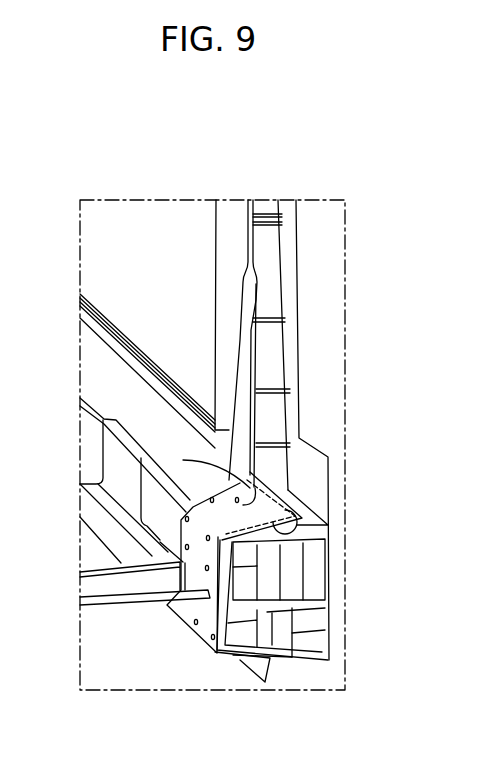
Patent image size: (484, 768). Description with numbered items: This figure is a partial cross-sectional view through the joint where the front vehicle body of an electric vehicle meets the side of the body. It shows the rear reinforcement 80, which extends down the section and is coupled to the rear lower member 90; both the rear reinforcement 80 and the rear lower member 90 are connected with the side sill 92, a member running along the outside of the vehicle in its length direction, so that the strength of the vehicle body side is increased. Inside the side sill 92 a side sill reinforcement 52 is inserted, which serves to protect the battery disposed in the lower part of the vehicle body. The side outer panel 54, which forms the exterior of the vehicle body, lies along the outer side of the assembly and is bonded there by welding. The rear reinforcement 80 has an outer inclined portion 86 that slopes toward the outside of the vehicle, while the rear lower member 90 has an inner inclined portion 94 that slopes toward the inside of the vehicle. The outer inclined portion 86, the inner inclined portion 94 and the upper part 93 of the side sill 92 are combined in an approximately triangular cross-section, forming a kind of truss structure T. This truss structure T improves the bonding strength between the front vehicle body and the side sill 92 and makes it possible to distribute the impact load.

The rear reinforcement 80 is at (283, 365).
The side outer panel 54 is at (307, 463).
The truss structure T is at (305, 508).
The outer inclined portion 86 is at (303, 524).
The side sill 92 is at (330, 585).
The side sill reinforcement 52 is at (280, 622).
The upper part of the side sill 93 is at (188, 547).
The inner inclined portion 94 is at (215, 448).
The rear lower member 90 is at (212, 653).